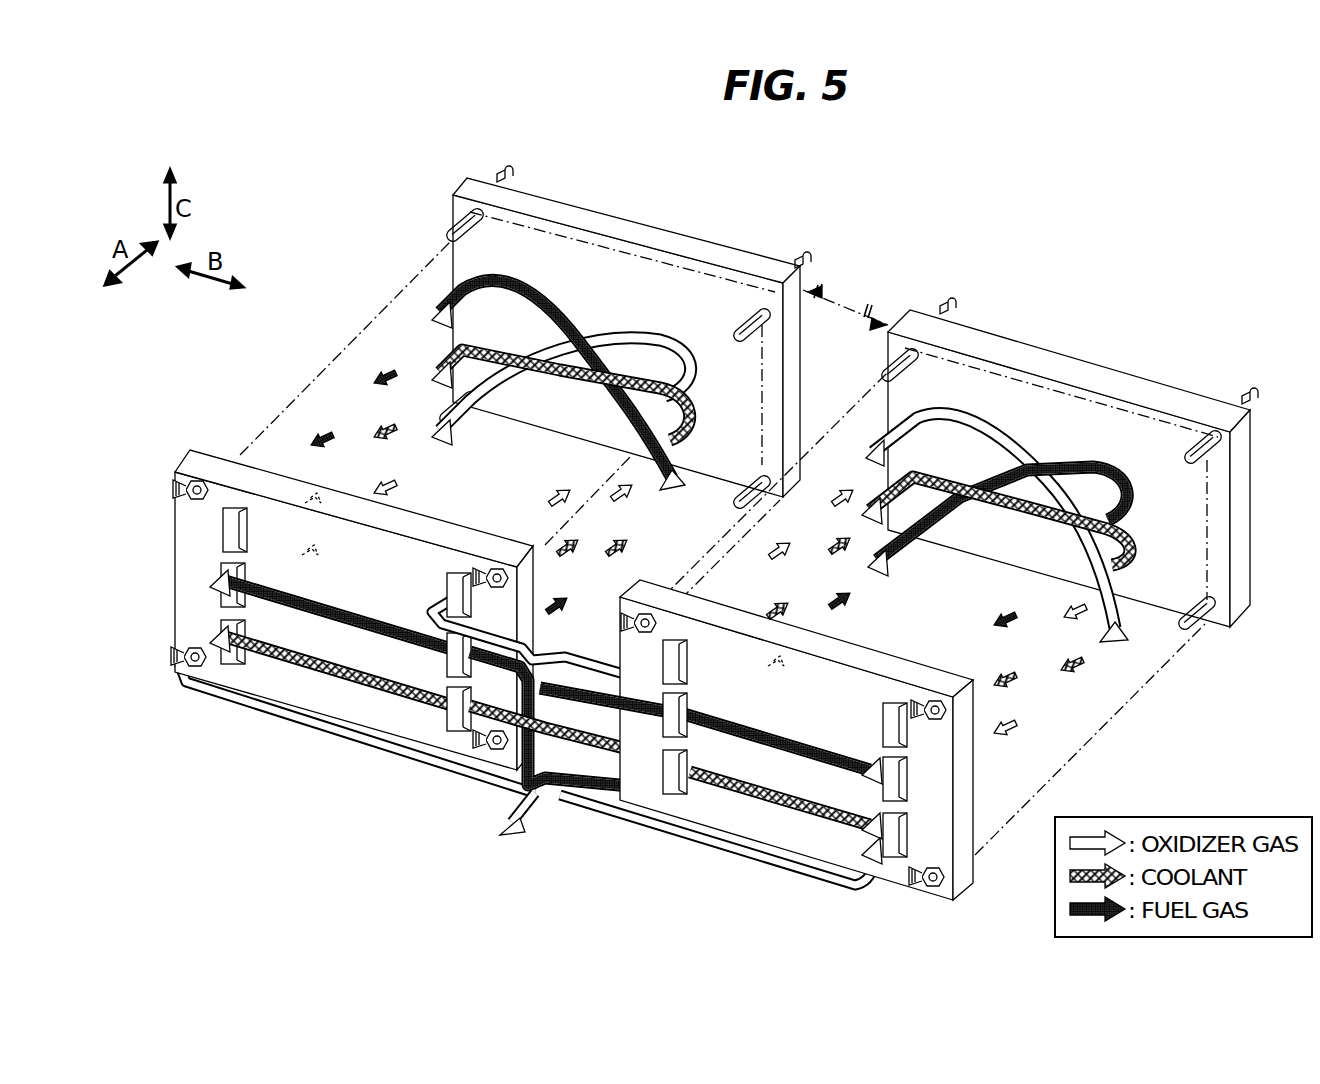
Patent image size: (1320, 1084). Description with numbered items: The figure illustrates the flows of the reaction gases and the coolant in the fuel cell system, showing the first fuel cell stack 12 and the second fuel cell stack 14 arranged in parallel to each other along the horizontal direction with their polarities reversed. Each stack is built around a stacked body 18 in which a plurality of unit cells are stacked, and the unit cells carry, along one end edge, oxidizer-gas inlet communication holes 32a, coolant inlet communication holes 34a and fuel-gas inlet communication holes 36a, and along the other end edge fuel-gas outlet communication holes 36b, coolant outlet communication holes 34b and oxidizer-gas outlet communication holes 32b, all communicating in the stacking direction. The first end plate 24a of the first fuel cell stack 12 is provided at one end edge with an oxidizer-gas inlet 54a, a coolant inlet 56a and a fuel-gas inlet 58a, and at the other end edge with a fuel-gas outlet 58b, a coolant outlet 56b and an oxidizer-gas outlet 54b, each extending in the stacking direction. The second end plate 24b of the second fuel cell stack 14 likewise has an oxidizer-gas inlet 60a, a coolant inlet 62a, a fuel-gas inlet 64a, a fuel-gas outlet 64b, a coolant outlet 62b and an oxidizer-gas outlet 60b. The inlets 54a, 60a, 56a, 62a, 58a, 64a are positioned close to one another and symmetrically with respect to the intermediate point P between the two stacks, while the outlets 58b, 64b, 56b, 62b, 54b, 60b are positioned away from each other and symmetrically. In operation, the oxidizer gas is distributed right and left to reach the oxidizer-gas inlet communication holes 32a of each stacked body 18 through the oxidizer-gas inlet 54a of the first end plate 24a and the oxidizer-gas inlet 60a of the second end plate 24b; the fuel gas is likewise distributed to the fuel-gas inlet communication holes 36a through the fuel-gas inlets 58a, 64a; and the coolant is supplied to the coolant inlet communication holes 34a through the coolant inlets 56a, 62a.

The first fuel cell stack 12 is at (1118, 350).
The second fuel cell stack 14 is at (660, 210).
The stacked body 18 is at (328, 358).
The first end plate 24a is at (710, 262).
The second end plate 24b is at (1002, 345).
The oxidizer-gas inlet communication holes 32a is at (555, 487).
The oxidizer-gas outlet communication holes 32b is at (382, 482).
The coolant inlet communication holes 34a is at (585, 532).
The coolant outlet communication holes 34b is at (382, 426).
The fuel-gas inlet communication holes 36a is at (560, 592).
The fuel-gas outlet communication holes 36b is at (392, 362).
The oxidizer-gas inlet 54a is at (688, 668).
The oxidizer-gas outlet 54b is at (884, 830).
The coolant inlet 56a is at (688, 705).
The coolant outlet 56b is at (884, 775).
The fuel-gas inlet 58a is at (688, 760).
The fuel-gas outlet 58b is at (884, 720).
The oxidizer-gas inlet 60a is at (448, 600).
The oxidizer-gas outlet 60b is at (221, 640).
The coolant inlet 62a is at (447, 656).
The coolant outlet 62b is at (221, 585).
The fuel-gas inlet 64a is at (447, 709).
The fuel-gas outlet 64b is at (224, 521).
The intermediate point P is at (847, 300).